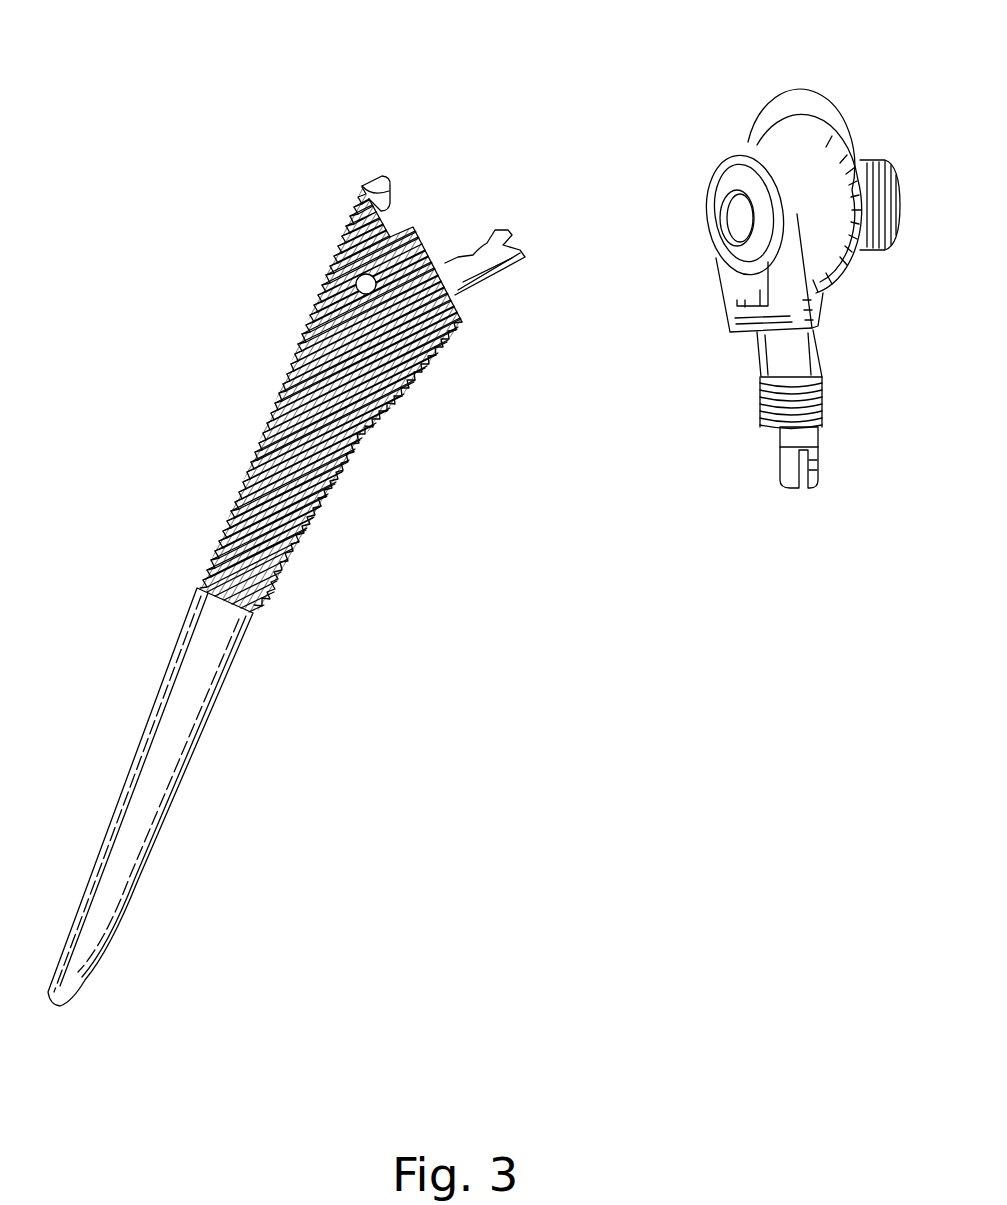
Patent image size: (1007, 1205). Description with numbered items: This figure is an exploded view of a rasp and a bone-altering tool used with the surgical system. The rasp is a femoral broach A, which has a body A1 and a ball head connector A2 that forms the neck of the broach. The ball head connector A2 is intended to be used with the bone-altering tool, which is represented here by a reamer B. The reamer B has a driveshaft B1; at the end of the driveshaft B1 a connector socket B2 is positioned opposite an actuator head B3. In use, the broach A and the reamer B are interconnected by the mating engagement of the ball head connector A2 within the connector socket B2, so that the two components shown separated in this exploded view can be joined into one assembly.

The femoral broach A is at (210, 495).
The body A1 is at (197, 688).
The ball head connector A2 is at (490, 244).
The reamer B is at (706, 127).
The driveshaft B1 is at (787, 442).
The connector socket B2 is at (730, 328).
The actuator head B3 is at (870, 142).